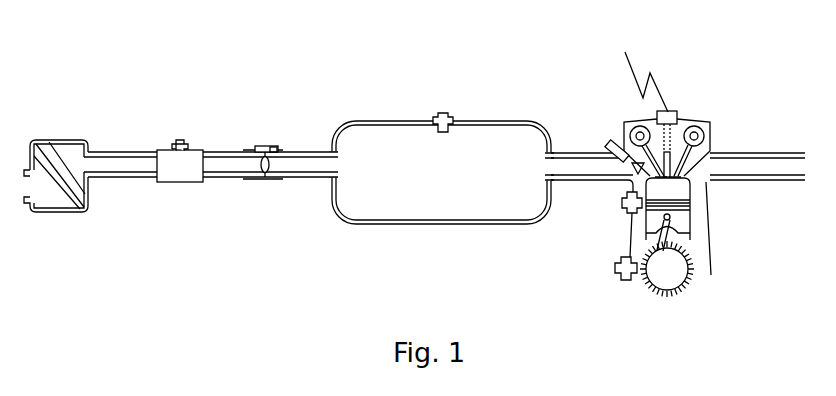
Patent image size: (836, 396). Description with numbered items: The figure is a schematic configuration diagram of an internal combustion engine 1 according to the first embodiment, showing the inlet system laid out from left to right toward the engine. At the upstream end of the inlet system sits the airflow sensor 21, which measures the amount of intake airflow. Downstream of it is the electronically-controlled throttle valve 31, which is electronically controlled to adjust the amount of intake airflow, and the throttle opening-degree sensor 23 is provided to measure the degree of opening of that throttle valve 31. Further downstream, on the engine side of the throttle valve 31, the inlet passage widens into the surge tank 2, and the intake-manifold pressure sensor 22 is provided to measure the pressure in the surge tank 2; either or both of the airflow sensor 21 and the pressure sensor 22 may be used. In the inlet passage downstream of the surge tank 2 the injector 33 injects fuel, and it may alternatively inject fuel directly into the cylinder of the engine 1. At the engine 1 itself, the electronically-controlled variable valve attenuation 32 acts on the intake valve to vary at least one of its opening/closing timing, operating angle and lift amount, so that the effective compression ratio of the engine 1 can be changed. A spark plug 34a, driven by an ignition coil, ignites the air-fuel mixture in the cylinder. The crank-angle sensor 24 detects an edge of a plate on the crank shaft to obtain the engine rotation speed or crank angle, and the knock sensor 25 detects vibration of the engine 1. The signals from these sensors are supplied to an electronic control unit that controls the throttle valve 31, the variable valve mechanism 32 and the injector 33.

The engine 1 is at (672, 180).
The surge tank 2 is at (435, 210).
The airflow sensor 21 is at (183, 145).
The intake-manifold pressure sensor 22 is at (445, 117).
The throttle opening-degree sensor 23 is at (265, 147).
The crank-angle sensor 24 is at (617, 268).
The knock sensor 25 is at (623, 203).
The electronically-controlled throttle valve 31 is at (267, 176).
The electronically-controlled variable valve attenuation 32 is at (632, 122).
The injector 33 is at (608, 138).
The spark plug 34a is at (705, 157).